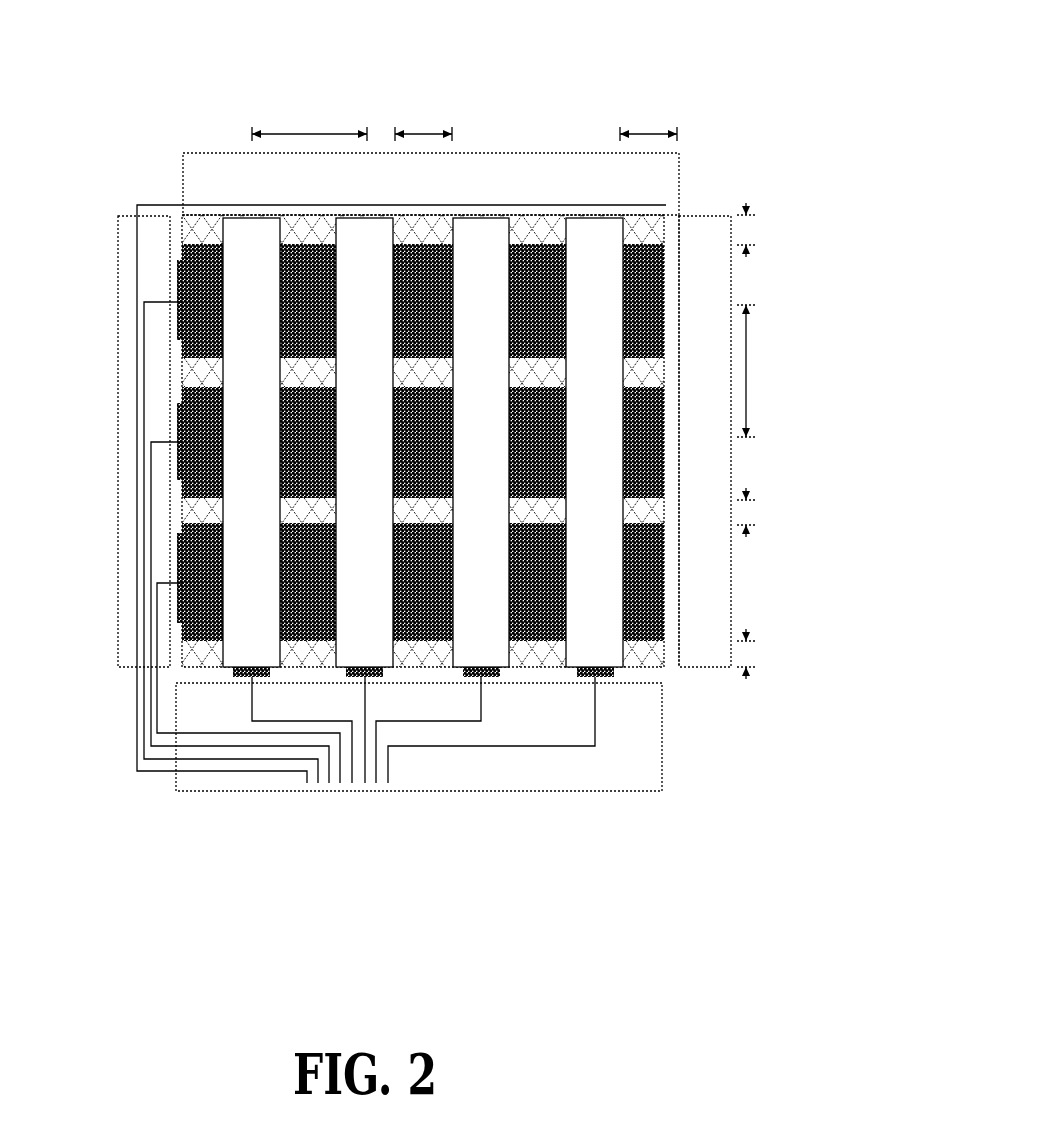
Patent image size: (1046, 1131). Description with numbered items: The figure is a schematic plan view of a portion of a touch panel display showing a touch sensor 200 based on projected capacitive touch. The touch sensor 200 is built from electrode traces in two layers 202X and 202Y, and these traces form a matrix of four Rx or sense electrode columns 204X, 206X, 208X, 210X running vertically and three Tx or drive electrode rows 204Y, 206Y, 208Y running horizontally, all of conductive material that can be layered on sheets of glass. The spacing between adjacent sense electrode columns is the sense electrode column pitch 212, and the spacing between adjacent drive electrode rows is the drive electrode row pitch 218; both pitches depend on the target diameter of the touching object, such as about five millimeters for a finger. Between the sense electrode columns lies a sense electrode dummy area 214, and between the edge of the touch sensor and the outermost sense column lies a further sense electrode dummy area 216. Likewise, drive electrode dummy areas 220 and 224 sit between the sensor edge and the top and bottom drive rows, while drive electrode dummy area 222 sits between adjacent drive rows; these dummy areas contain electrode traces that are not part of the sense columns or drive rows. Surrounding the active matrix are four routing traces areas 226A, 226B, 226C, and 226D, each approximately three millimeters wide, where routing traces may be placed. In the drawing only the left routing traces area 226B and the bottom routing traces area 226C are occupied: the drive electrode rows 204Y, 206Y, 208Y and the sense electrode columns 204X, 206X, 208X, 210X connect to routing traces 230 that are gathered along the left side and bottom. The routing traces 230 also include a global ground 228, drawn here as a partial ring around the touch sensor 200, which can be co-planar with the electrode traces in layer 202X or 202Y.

The touch sensor 200 is at (668, 55).
The touch sensor layer 202X is at (658, 222).
The touch sensor layer 202Y is at (474, 276).
The sense electrode column 204X is at (242, 656).
The sense electrode column 206X is at (354, 656).
The sense electrode column 208X is at (471, 656).
The sense electrode column 210X is at (584, 656).
The drive electrode row 204Y is at (660, 268).
The drive electrode row 206Y is at (660, 406).
The drive electrode row 208Y is at (660, 549).
The sense electrode column pitch 212 is at (309, 128).
The sense electrode dummy area 214 is at (423, 128).
The sense electrode dummy area 216 is at (648, 128).
The drive electrode row pitch 218 is at (755, 371).
The drive electrode dummy area 220 is at (755, 230).
The drive electrode dummy area 222 is at (754, 512).
The drive electrode dummy area 224 is at (754, 654).
The routing traces area 226A is at (502, 152).
The routing traces area 226B is at (117, 268).
The routing traces area 226C is at (600, 791).
The routing traces area 226D is at (690, 667).
The global ground 228 is at (157, 204).
The routing traces 230 is at (302, 797).